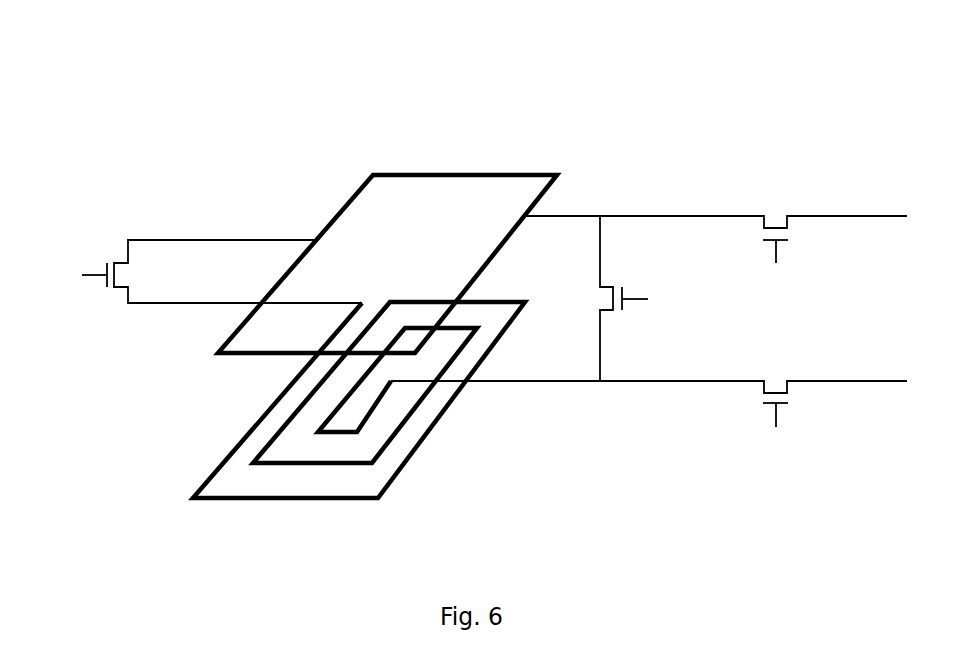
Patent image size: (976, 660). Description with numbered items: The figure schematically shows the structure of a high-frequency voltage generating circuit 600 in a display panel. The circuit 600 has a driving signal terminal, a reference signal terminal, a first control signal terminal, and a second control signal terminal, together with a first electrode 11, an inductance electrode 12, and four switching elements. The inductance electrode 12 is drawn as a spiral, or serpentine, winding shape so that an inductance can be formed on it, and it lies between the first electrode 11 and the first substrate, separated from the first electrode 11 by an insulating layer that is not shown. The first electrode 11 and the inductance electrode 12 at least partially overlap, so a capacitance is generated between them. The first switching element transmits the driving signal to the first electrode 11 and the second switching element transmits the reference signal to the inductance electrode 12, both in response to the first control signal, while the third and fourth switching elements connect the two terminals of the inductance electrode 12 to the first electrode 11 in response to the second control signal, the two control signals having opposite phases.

The high-frequency voltage generating circuit 600 is at (178, 133).
The first electrode 11 is at (468, 175).
The inductance electrode 12 is at (422, 442).